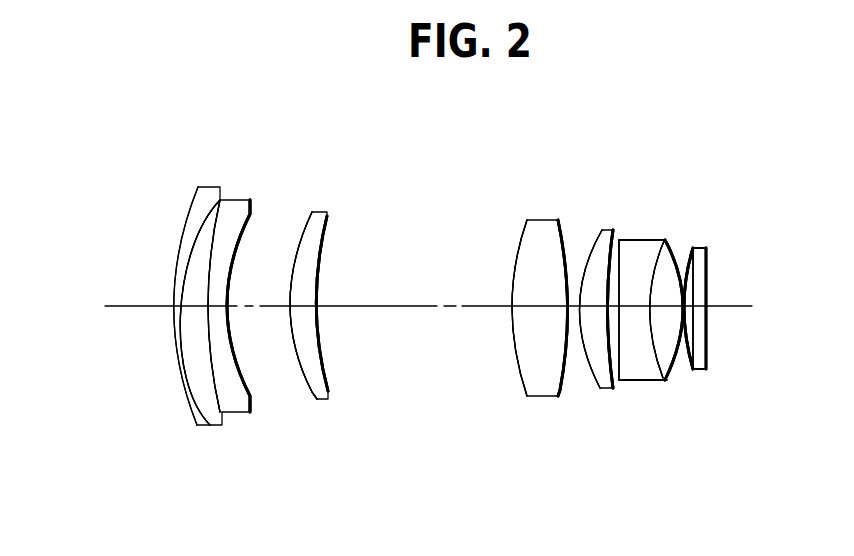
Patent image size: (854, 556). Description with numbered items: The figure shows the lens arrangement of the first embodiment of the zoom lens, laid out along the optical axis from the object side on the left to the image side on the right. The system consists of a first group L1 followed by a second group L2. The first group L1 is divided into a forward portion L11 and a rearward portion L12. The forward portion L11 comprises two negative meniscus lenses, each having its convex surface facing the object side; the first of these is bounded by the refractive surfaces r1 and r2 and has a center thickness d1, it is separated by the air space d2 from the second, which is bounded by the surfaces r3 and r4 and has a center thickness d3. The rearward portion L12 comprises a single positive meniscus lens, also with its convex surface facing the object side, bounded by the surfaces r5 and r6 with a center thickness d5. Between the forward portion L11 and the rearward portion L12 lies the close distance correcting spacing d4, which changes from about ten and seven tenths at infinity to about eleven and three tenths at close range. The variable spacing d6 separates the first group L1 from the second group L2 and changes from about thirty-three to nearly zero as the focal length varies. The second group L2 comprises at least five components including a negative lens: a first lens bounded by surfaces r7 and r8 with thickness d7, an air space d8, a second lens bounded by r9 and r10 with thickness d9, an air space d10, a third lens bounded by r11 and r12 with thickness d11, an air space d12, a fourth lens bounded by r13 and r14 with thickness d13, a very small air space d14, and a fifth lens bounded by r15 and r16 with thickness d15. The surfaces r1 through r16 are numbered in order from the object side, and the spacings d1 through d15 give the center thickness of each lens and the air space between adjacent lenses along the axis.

The first group L1 is at (341, 90).
The forward portion of the first group L11 is at (268, 156).
The rearward portion of the first group L12 is at (321, 212).
The second group L2 is at (723, 156).
The first refractive surface r1 is at (198, 426).
The second refractive surface r2 is at (203, 430).
The third refractive surface r3 is at (222, 413).
The fourth refractive surface r4 is at (248, 395).
The fifth refractive surface r5 is at (312, 393).
The sixth refractive surface r6 is at (328, 390).
The seventh refractive surface r7 is at (526, 394).
The eighth refractive surface r8 is at (562, 396).
The ninth refractive surface r9 is at (594, 388).
The tenth refractive surface r10 is at (608, 390).
The eleventh refractive surface r11 is at (620, 381).
The twelfth refractive surface r12 is at (651, 381).
The thirteenth refractive surface r13 is at (672, 381).
The fourteenth refractive surface r14 is at (695, 371).
The fifteenth refractive surface r15 is at (703, 371).
The sixteenth refractive surface r16 is at (712, 371).
The center thickness of the first lens d1 is at (173, 304).
The air space between the first and second lenses d2 is at (200, 312).
The center thickness of the second lens d3 is at (227, 304).
The close distance correcting spacing d4 is at (272, 306).
The center thickness of the third lens d5 is at (309, 305).
The variable spacing d6 is at (421, 306).
The center thickness of the fourth lens d7 is at (540, 308).
The air space between the fourth and fifth lenses d8 is at (567, 305).
The center thickness of the fifth lens d9 is at (596, 309).
The air space between the fifth and sixth lenses d10 is at (619, 305).
The center thickness of the sixth lens d11 is at (641, 310).
The air space between the sixth and seventh lenses d12 is at (657, 312).
The center thickness of the seventh lens d13 is at (685, 303).
The air space between the seventh and eighth lenses d14 is at (694, 306).
The center thickness of the eighth lens d15 is at (703, 317).